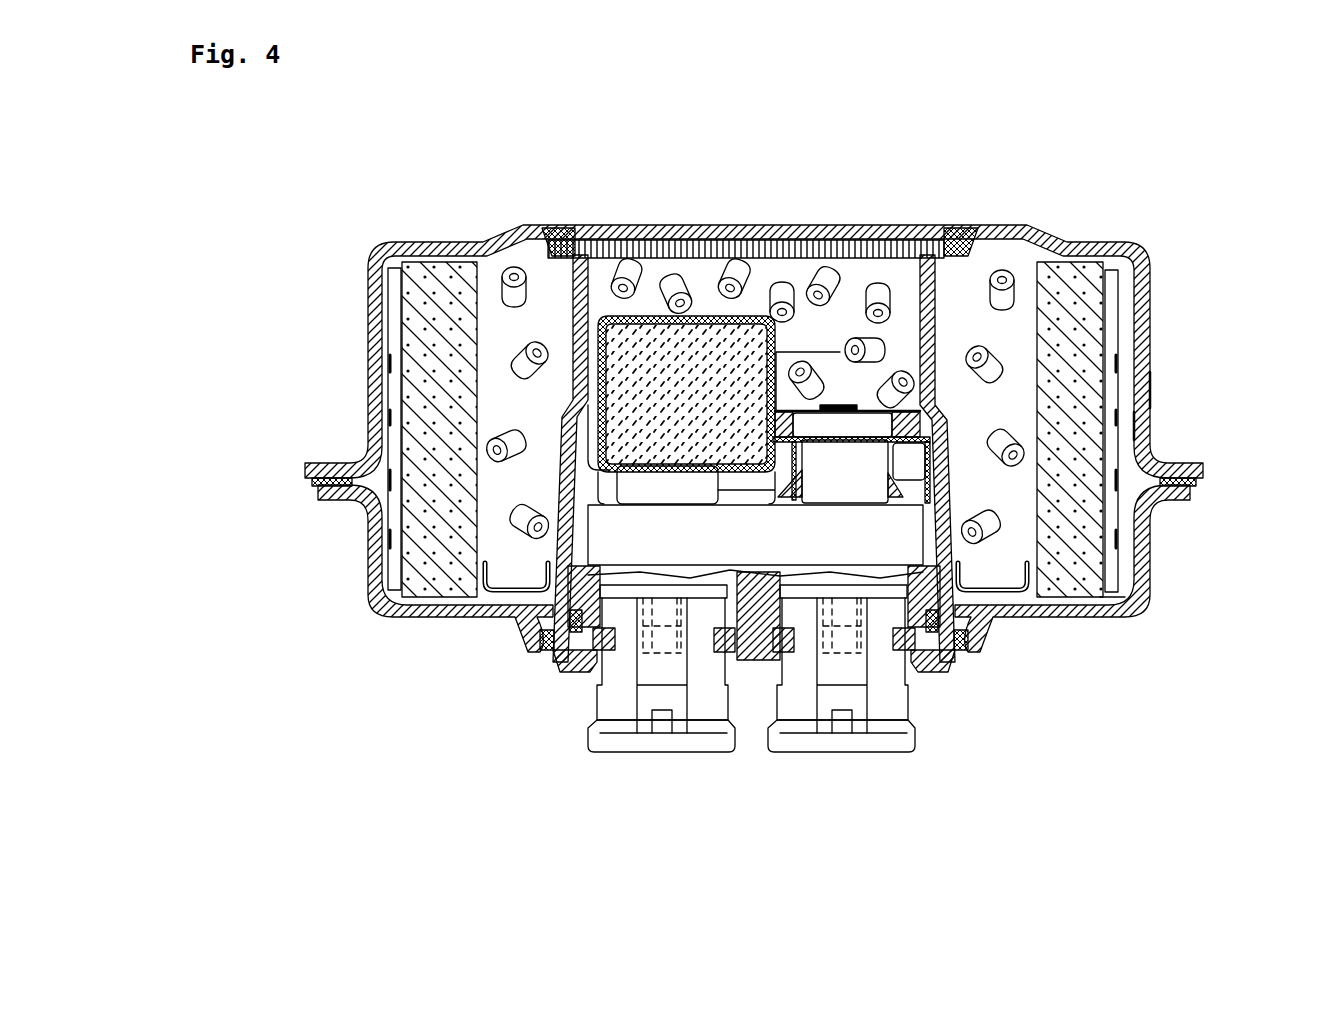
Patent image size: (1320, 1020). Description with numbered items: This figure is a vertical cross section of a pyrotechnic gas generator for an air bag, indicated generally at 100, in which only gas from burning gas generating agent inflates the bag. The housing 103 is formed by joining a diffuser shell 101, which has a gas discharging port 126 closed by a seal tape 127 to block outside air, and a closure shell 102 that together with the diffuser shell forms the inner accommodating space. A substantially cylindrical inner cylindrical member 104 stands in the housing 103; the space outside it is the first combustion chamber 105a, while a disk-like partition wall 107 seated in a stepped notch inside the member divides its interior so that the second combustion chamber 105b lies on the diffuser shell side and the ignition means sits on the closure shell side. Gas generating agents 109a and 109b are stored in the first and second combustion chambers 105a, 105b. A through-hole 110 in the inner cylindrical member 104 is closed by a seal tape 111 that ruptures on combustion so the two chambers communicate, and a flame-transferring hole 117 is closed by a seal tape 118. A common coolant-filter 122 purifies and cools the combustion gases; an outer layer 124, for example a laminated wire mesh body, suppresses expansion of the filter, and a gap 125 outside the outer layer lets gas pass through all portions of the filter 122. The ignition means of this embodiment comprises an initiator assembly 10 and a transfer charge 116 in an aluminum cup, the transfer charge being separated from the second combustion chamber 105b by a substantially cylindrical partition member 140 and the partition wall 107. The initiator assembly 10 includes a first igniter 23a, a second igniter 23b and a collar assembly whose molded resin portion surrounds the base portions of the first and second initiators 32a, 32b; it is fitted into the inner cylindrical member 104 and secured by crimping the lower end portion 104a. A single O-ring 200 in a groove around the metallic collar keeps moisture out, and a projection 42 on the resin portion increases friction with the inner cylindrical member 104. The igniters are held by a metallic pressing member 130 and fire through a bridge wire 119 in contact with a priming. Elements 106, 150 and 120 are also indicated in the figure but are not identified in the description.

The fuel pump module 100 is at (783, 186).
The housing 103 is at (172, 418).
The diffuser shell 101 is at (375, 448).
The closure shell 102 is at (375, 525).
The coolant-filter 122 is at (432, 272).
The left yoke plate 106 is at (398, 306).
The partition wall 107 is at (1050, 332).
The outer layer 124 is at (1112, 495).
The gap 125 is at (1112, 592).
The gas discharging port 126 is at (1152, 391).
The seal tape 127 is at (1138, 425).
The cover plate 150 is at (738, 228).
The partition member 140 is at (550, 238).
The seal tape 111 is at (985, 258).
The flame-transferring hole 117 is at (582, 403).
The through-hole 110 is at (933, 330).
The seal tape 118 is at (560, 447).
The transfer charge 116 is at (641, 345).
The second combustion chamber 105b is at (842, 355).
The first combustion chamber 105a is at (1015, 425).
The first initiator 32a is at (685, 505).
The second initiator 32b is at (868, 485).
The projection 42 is at (923, 527).
The gas generating agent 109b is at (623, 275).
The gas generating agent 109a is at (1008, 268).
The coil member 120 is at (858, 405).
The bridge wire 119 is at (878, 408).
The pressing member 130 is at (532, 622).
The inner cylindrical member 104 is at (528, 612).
The O-ring 200 is at (574, 632).
The lower end portion 104a is at (583, 672).
The initiator assembly 10 is at (750, 757).
The first igniter 23a is at (653, 754).
The second igniter 23b is at (865, 754).